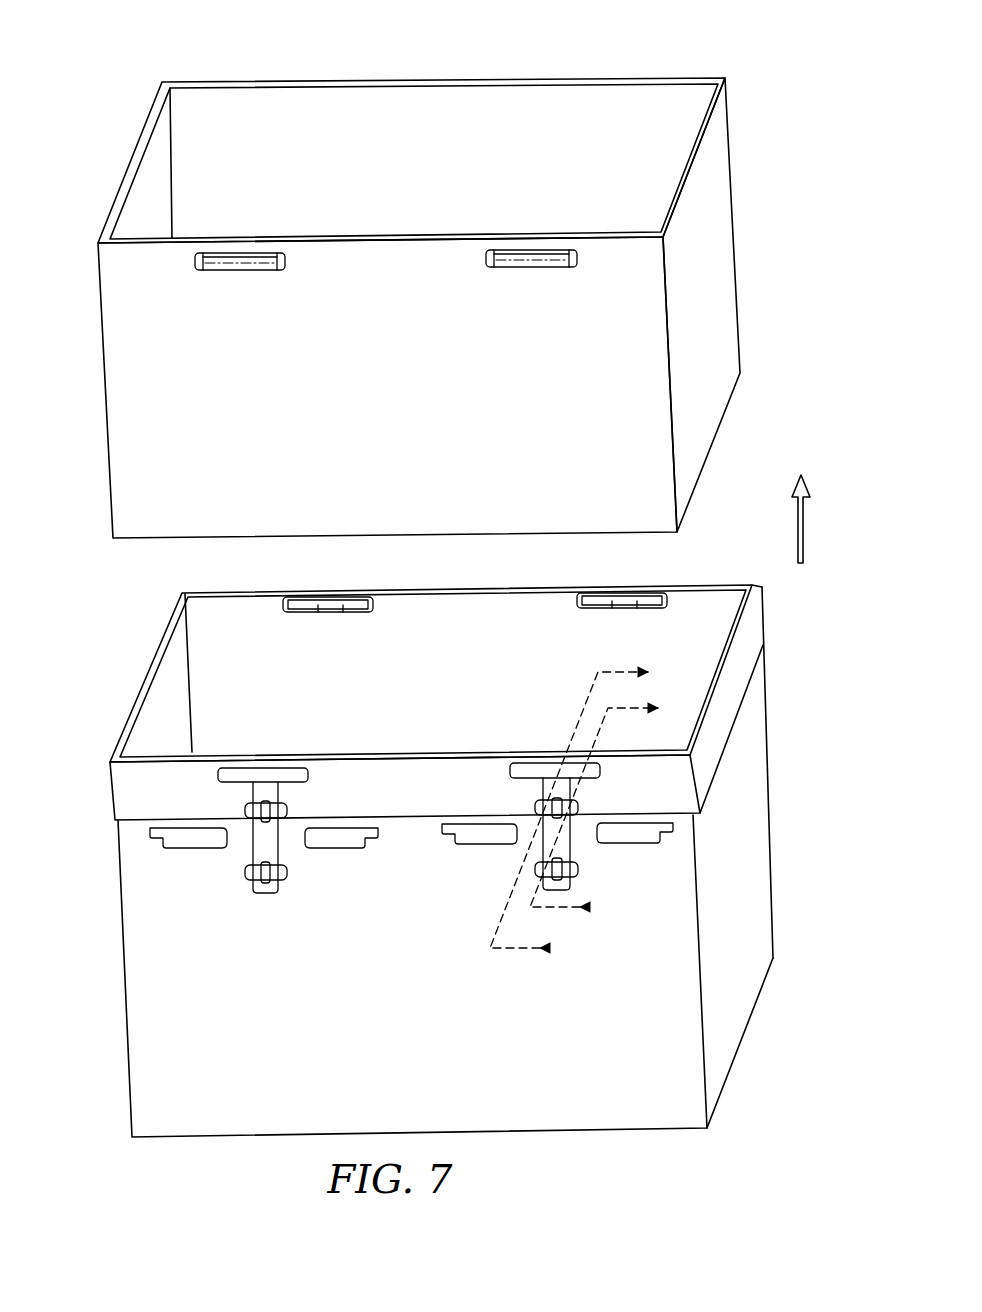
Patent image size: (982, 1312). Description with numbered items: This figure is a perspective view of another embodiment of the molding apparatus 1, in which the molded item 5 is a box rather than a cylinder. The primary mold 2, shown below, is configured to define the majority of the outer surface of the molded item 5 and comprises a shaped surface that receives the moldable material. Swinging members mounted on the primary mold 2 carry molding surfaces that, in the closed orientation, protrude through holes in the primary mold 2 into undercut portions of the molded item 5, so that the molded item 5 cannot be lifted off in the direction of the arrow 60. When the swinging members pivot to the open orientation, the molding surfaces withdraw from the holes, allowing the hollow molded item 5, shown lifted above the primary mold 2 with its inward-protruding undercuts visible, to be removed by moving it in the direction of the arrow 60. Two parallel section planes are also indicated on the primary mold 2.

The molding apparatus 1 is at (445, 836).
The primary mold 2 is at (737, 985).
The molded item 5 is at (416, 275).
The arrow 60 is at (816, 519).